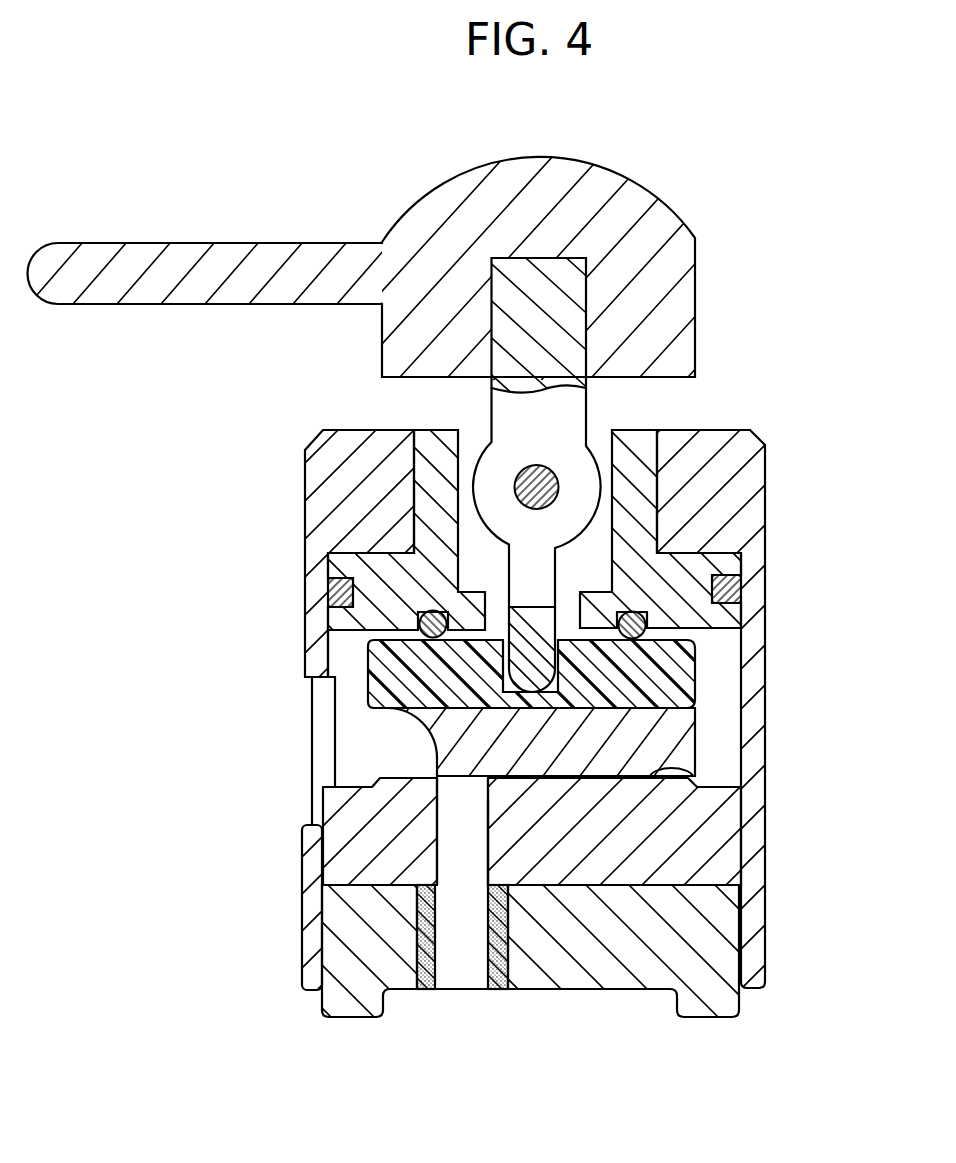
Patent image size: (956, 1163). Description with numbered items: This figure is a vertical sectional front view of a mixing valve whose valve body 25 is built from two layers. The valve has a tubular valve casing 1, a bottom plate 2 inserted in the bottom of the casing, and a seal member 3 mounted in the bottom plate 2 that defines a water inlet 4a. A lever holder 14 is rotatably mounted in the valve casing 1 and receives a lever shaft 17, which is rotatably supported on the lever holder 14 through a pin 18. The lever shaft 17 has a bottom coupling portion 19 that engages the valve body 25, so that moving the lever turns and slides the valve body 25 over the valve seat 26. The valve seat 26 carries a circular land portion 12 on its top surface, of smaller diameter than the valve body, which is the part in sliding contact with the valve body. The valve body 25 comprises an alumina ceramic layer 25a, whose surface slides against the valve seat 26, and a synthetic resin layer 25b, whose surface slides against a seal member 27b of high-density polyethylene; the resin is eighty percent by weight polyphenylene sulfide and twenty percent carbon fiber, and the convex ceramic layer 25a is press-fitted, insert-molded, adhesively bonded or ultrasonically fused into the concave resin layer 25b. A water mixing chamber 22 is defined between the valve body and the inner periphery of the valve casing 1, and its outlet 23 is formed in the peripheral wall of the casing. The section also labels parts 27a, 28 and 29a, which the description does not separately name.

The valve casing 1 is at (318, 466).
The bottom plate 2 is at (322, 998).
The seal member 3 is at (424, 989).
The water inlet 4a is at (452, 960).
The circular land portion 12 is at (697, 767).
The lever holder 14 is at (433, 452).
The lever shaft 17 is at (517, 549).
The pin 18 is at (528, 468).
The bottom coupling portion 19 is at (520, 686).
The water mixing chamber 22 is at (337, 650).
The outlet 23 is at (320, 705).
The valve body 25 is at (564, 710).
The alumina ceramic layer 25a is at (687, 745).
The synthetic resin layer 25b is at (663, 673).
The valve seat 26 is at (343, 800).
The seal ring 27a is at (325, 597).
The seal member 27b is at (742, 620).
The curved recess 28 is at (397, 718).
The passage 29a is at (490, 860).